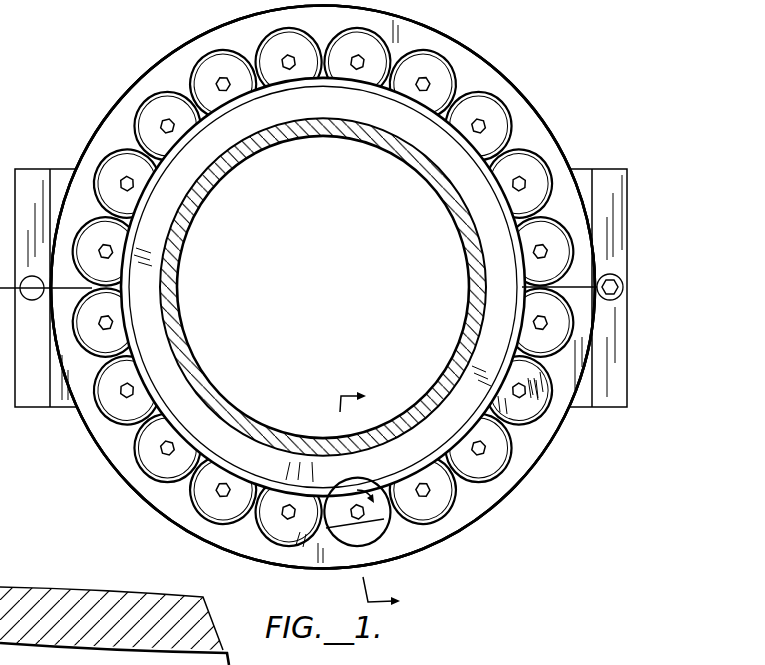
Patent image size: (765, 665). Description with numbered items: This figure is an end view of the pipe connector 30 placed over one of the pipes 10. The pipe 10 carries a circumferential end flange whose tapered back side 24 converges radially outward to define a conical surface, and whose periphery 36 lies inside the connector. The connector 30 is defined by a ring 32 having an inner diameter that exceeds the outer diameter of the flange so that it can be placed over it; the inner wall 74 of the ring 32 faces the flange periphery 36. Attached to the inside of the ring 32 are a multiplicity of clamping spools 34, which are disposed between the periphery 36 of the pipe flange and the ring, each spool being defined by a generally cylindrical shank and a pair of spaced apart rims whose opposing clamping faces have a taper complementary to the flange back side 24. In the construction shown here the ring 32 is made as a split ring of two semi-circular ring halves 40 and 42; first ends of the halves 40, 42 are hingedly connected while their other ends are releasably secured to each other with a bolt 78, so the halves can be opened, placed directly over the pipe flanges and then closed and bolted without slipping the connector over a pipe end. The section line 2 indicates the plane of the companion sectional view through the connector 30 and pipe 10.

The section line 2 is at (380, 493).
The pipe 10 is at (436, 172).
The back side of flange 24 is at (484, 208).
The connector 30 is at (134, 52).
The ring 32 is at (243, 38).
The clamping spools 34 is at (268, 50).
The periphery of pipe flange 36 is at (527, 287).
The ring half 40 is at (570, 168).
The ring half 42 is at (533, 447).
The inner wall of ring 74 is at (218, 165).
The bolt 78 is at (630, 290).